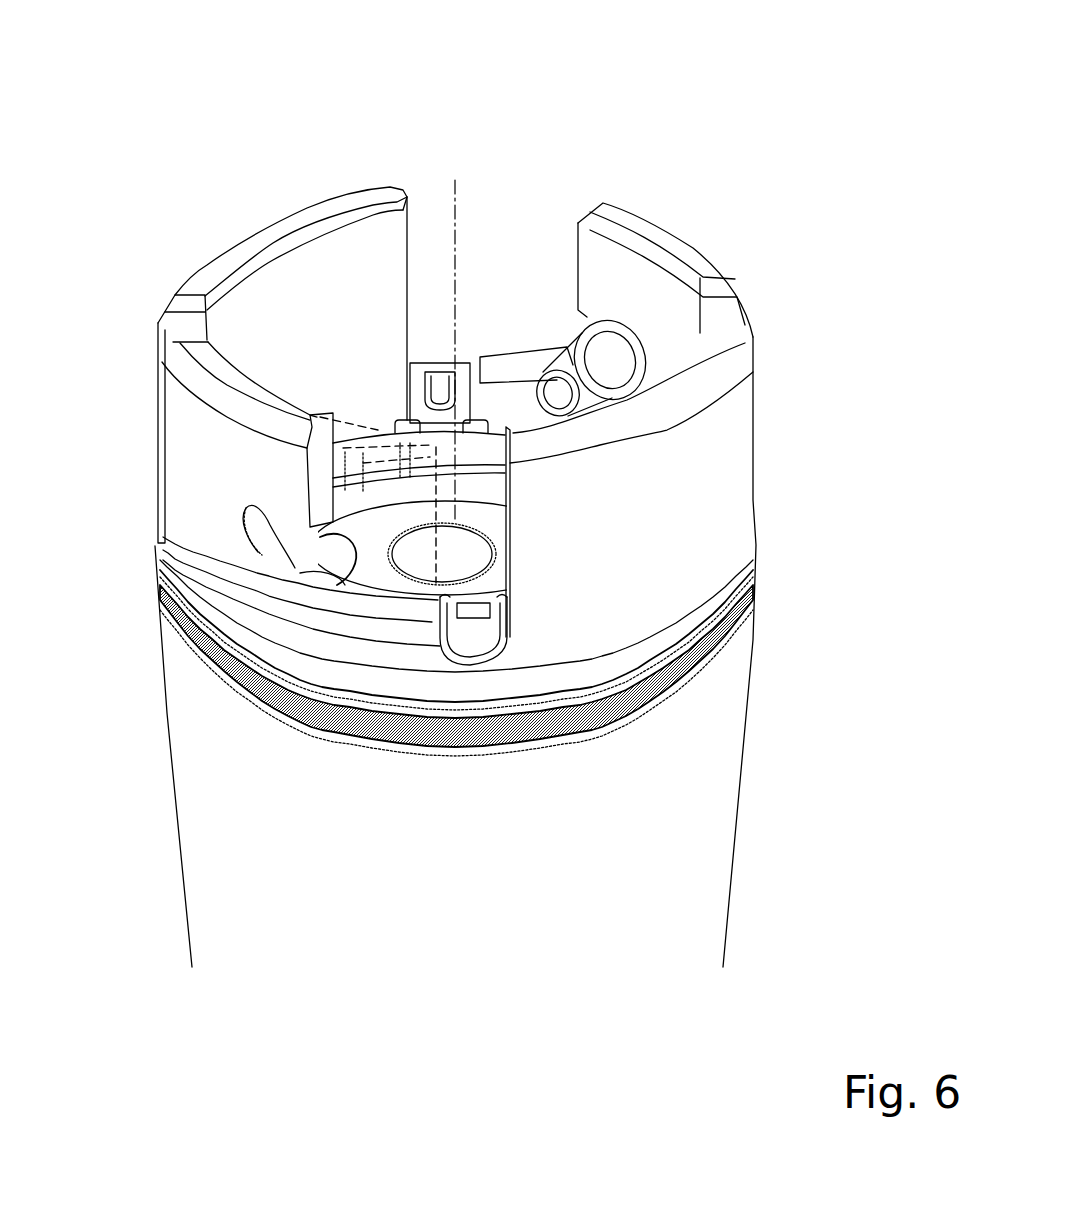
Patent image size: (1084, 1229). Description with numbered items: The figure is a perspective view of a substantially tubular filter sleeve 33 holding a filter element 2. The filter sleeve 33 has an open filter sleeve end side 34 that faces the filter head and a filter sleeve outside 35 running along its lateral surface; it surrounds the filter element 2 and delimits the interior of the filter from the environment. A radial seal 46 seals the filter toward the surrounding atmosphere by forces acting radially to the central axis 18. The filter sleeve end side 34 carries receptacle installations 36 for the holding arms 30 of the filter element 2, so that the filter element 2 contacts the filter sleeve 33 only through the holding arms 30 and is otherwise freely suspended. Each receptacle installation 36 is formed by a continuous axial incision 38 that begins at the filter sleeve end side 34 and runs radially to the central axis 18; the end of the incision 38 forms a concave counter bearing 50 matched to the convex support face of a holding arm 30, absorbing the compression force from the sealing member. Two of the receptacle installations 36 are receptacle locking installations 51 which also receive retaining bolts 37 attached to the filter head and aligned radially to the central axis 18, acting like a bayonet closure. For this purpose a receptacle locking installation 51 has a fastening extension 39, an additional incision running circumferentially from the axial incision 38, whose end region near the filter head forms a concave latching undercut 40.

The central axis 18 is at (455, 180).
The filter sleeve end side 34 is at (227, 243).
The receptacle locking installation 51 is at (388, 442).
The retaining bolt 37 is at (613, 333).
The receptacle installation 36 is at (489, 441).
The axial incision 38 is at (504, 550).
The latching undercut 40 is at (262, 548).
The filter element 2 is at (333, 537).
The holding arm 30 is at (478, 618).
The fastening extension 39 is at (296, 574).
The counter bearing 50 is at (474, 656).
The filter sleeve outside 35 is at (226, 813).
The radial seal 46 is at (705, 682).
The filter sleeve 33 is at (170, 892).